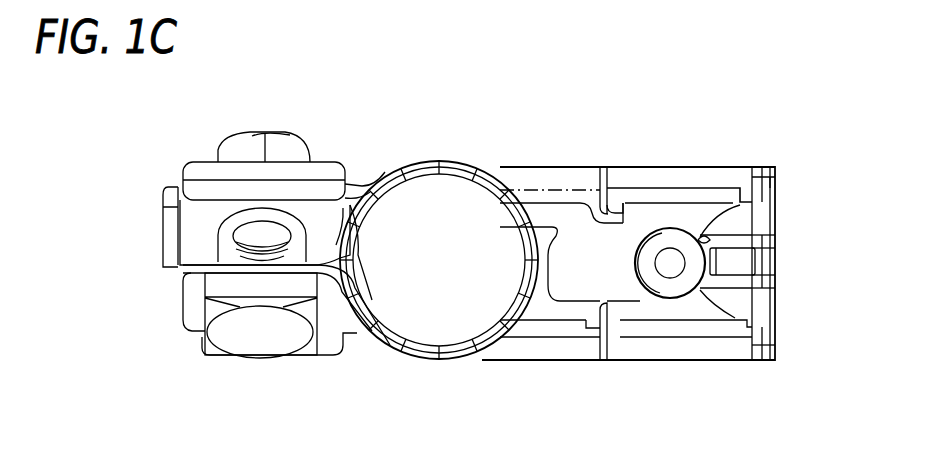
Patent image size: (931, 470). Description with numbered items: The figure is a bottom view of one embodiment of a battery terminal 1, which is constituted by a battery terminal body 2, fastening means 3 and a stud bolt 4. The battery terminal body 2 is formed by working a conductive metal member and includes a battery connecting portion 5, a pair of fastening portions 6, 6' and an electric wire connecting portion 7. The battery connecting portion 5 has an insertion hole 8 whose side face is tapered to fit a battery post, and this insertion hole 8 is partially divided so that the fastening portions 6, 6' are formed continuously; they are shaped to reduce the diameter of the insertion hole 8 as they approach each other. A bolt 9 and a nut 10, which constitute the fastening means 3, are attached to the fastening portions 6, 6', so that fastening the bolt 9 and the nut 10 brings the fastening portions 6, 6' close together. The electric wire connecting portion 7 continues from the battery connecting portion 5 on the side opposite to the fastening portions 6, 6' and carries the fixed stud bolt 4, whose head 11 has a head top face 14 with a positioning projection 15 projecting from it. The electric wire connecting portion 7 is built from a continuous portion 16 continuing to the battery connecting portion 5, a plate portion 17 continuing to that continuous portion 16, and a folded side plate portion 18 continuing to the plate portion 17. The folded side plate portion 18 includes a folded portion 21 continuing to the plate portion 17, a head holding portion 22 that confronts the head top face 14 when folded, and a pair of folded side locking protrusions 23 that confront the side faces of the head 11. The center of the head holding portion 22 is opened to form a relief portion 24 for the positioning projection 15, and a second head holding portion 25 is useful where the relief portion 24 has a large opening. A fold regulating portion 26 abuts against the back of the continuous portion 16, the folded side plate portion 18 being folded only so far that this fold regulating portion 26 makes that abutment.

The battery terminal 1 is at (458, 136).
The battery terminal body 2 is at (403, 161).
The fastening means 3 is at (255, 362).
The stud bolt 4 is at (663, 293).
The battery connecting portion 5 is at (425, 361).
The fastening portion 6 is at (280, 346).
The fastening portion 6' is at (239, 186).
The electric wire connecting portion 7 is at (686, 167).
The insertion hole 8 is at (365, 308).
The bolt 9 is at (277, 345).
The nut 10 is at (243, 150).
The head 11 is at (770, 290).
The head top face 14 is at (703, 293).
The positioning projection 15 is at (633, 322).
The continuous portion 16 is at (527, 168).
The plate portion 17 is at (645, 167).
The folded side plate portion 18 is at (708, 167).
The folded portion 21 is at (765, 218).
The head holding portion 22 is at (617, 268).
The folded side locking protrusion 23 is at (727, 197).
The relief portion 24 is at (758, 213).
The second head holding portion 25 is at (747, 262).
The fold regulating portion 26 is at (557, 285).